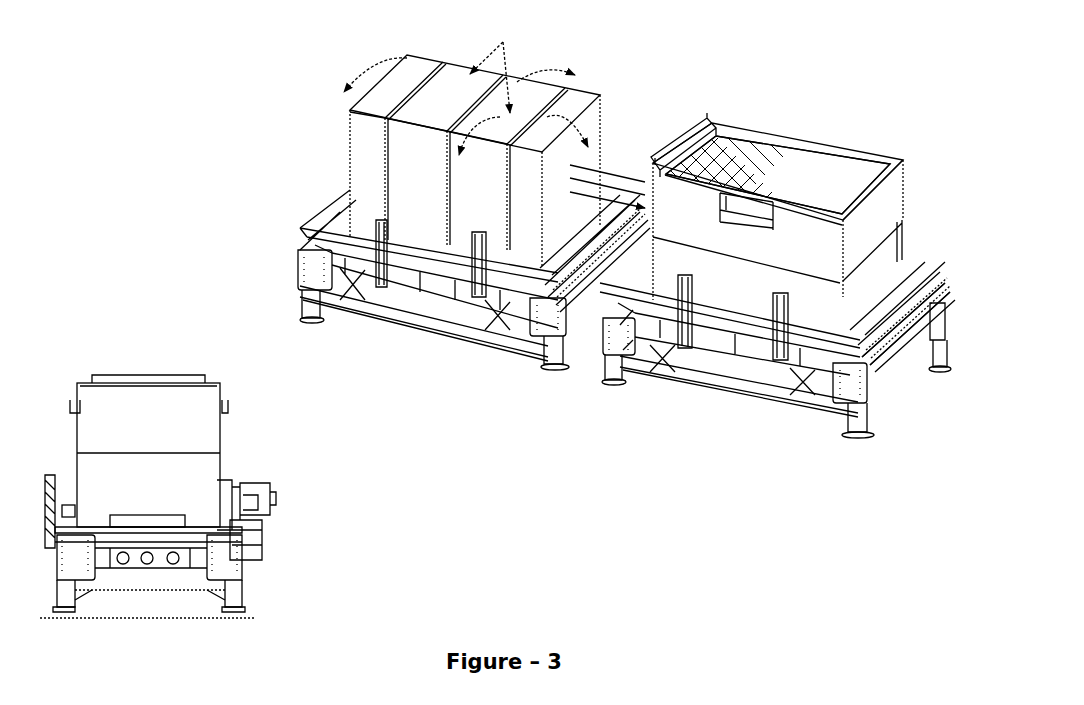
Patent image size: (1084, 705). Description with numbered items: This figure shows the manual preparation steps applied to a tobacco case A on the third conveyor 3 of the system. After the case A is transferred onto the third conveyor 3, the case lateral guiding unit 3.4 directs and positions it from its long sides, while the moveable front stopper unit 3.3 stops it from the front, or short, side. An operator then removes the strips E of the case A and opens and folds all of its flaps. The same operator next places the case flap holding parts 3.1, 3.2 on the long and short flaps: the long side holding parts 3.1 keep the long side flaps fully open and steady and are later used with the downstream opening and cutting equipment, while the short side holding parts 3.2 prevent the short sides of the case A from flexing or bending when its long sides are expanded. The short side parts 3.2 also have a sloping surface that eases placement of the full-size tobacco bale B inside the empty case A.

The case A is at (413, 62).
The tobacco bale B is at (830, 197).
The strips E is at (500, 190).
The third conveyor 3 is at (410, 277).
The long side holding parts 3.1 is at (750, 190).
The short side holding parts 3.2 is at (897, 157).
The front stopper unit 3.3 is at (907, 357).
The case lateral guiding unit 3.4 is at (227, 492).